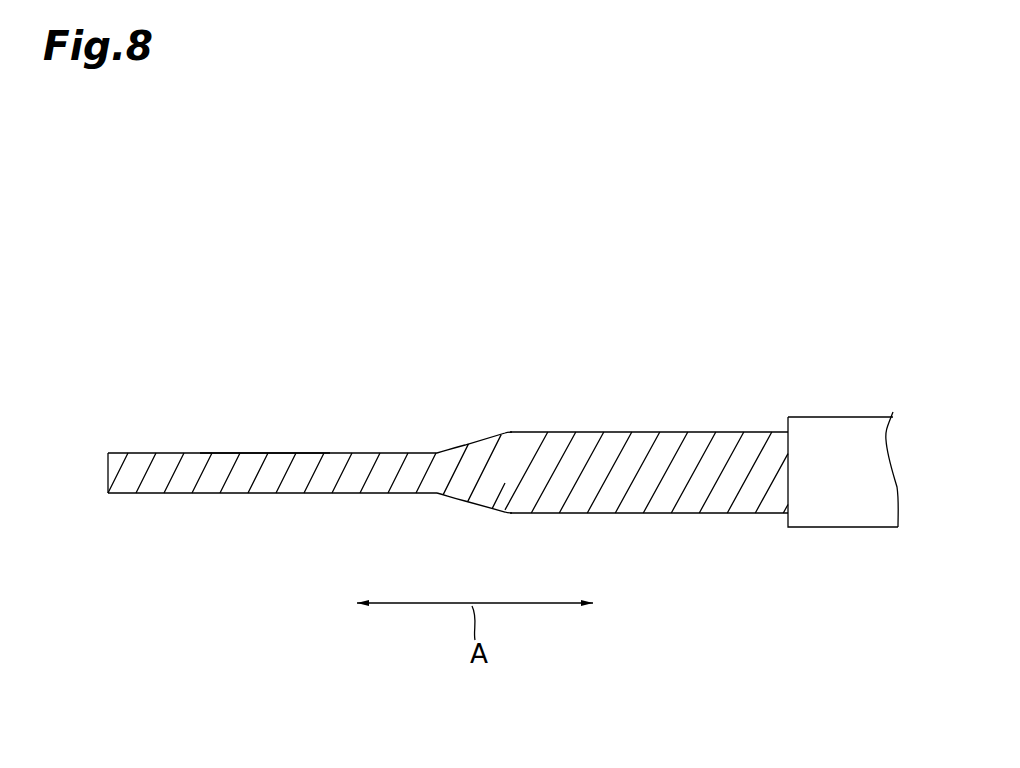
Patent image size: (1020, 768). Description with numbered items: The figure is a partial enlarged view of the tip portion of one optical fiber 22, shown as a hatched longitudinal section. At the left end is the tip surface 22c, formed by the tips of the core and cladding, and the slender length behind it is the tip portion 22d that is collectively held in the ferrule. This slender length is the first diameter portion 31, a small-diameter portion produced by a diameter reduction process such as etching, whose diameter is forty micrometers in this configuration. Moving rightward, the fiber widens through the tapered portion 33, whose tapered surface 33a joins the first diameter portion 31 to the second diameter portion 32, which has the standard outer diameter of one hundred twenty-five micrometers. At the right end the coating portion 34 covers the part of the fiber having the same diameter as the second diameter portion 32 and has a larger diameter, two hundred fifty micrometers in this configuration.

The optical fiber 22 is at (818, 316).
The tip surface 22c is at (108, 471).
The tip portion 22d is at (257, 468).
The first diameter portion 31 is at (370, 468).
The second diameter portion 32 is at (586, 448).
The tapered portion 33 is at (465, 460).
The tapered surface 33a is at (466, 505).
The coating portion 34 is at (843, 512).